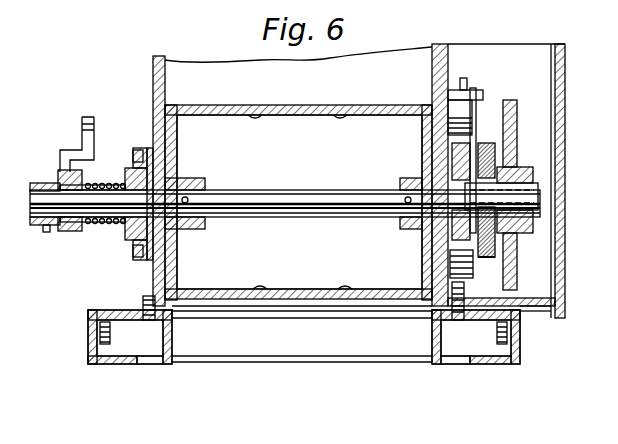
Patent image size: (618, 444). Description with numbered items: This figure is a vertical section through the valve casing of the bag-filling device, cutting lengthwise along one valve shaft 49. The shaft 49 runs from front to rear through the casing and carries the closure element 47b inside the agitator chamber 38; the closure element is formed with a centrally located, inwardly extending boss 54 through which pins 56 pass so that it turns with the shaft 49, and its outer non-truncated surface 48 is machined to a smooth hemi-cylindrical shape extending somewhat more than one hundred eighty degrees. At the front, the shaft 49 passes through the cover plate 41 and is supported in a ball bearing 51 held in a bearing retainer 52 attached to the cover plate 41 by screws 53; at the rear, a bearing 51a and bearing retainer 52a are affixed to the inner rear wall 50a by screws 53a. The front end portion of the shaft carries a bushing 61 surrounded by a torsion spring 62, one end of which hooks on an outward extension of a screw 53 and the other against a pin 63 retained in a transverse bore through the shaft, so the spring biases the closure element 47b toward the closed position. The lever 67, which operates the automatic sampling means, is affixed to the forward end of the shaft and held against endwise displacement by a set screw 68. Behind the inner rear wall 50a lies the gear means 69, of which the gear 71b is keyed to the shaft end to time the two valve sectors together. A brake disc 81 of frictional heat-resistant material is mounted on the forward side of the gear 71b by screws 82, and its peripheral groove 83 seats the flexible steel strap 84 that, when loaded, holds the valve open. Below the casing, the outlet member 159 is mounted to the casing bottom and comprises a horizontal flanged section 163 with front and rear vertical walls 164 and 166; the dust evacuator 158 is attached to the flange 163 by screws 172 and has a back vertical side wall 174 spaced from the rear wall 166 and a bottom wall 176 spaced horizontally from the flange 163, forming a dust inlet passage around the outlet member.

The agitator chamber 38 is at (303, 88).
The cover plate 41 is at (153, 84).
The closure element 47b is at (246, 266).
The outer non-truncated surface 48 is at (372, 106).
The shaft 49 is at (309, 217).
The inner rear wall 50a is at (438, 58).
The ball bearing 51 is at (130, 232).
The bearing 51a is at (450, 233).
The bearing retainer 52 is at (135, 246).
The bearing retainer 52a is at (440, 160).
The screw 53 is at (137, 148).
The screw 53a is at (450, 260).
The boss 54 is at (198, 178).
The pin 56 is at (212, 192).
The bushing 61 is at (76, 224).
The torsion spring 62 is at (106, 183).
The pin 63 is at (82, 200).
The lever 67 is at (62, 150).
The set screw 68 is at (46, 232).
The gear means 69 is at (508, 85).
The gear 71b is at (510, 140).
The brake disc 81 is at (497, 246).
The screw 82 is at (525, 180).
The groove 83 is at (486, 257).
The flexible steel strap 84 is at (474, 148).
The dust evacuator 158 is at (97, 360).
The outlet member 159 is at (294, 344).
The horizontal flanged section 163 is at (489, 334).
The front vertical wall 164 is at (173, 338).
The rear vertical wall 166 is at (432, 338).
The screw 172 is at (97, 337).
The back vertical side wall 174 is at (520, 342).
The bottom wall 176 is at (488, 360).